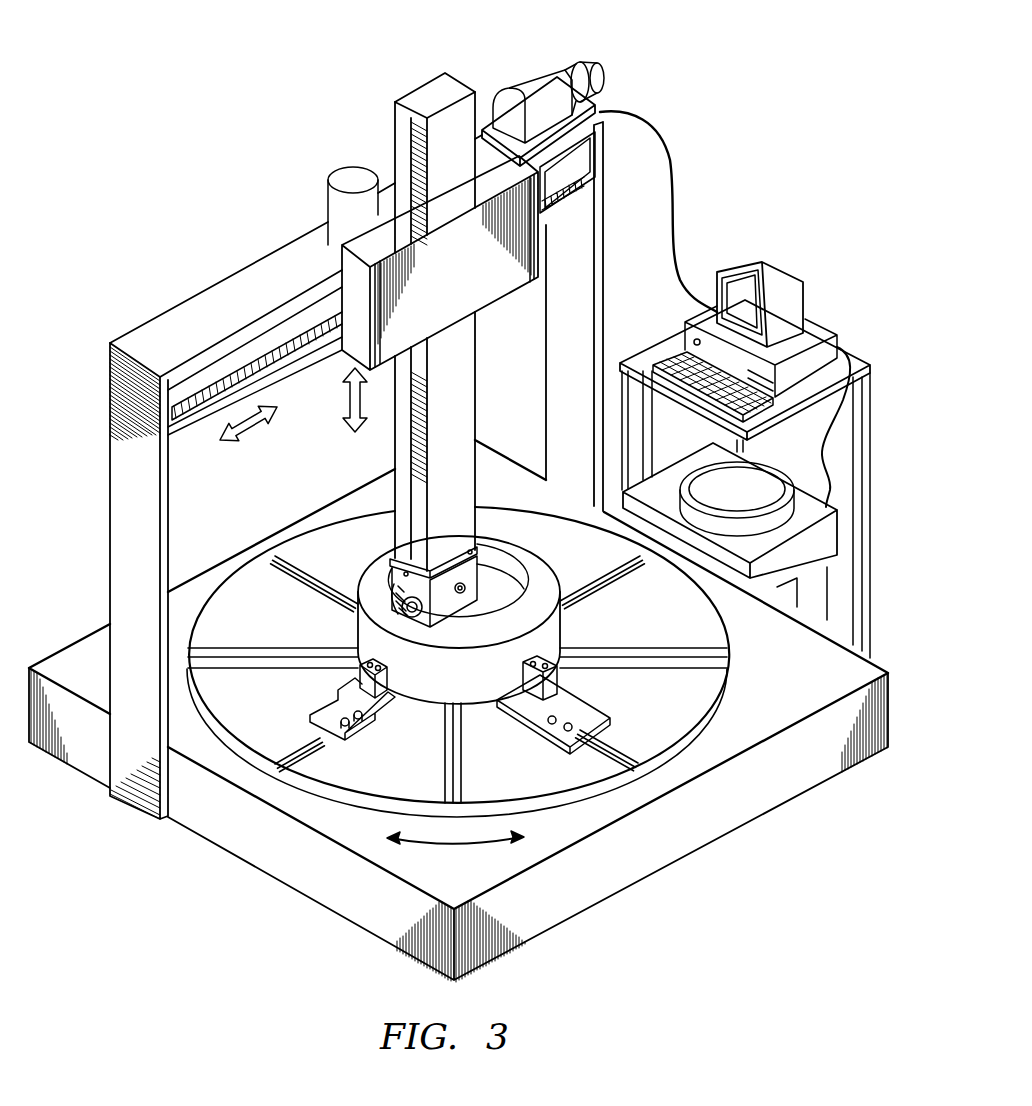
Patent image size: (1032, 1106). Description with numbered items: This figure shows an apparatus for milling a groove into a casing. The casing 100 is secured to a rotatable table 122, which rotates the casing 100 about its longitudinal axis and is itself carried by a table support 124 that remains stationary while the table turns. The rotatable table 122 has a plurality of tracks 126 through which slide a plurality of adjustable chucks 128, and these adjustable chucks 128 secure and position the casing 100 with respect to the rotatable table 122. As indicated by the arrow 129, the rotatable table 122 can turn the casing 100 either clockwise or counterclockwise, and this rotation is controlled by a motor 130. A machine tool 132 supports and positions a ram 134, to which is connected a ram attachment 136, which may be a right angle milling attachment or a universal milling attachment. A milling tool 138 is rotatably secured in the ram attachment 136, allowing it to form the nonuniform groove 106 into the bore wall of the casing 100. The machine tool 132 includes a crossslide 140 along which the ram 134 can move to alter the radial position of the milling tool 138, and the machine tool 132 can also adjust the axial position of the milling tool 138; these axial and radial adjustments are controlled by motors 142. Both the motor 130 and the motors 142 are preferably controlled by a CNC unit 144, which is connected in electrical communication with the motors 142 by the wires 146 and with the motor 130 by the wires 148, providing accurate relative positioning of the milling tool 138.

The casing 100 is at (560, 630).
The nonuniform groove 106 is at (500, 582).
The rotatable table 122 is at (682, 758).
The table support 124 is at (716, 826).
The tracks 126 is at (444, 770).
The adjustable chucks 128 is at (332, 707).
The arrow 129 is at (461, 843).
The motor 130 is at (710, 480).
The machine tool 132 is at (229, 300).
The ram 134 is at (467, 357).
The ram attachment 136 is at (439, 601).
The milling tool 138 is at (392, 588).
The crossslide 140 is at (580, 200).
The motors 142 is at (347, 168).
The CNC unit 144 is at (785, 268).
The wires 146 is at (663, 131).
The wires 148 is at (819, 438).